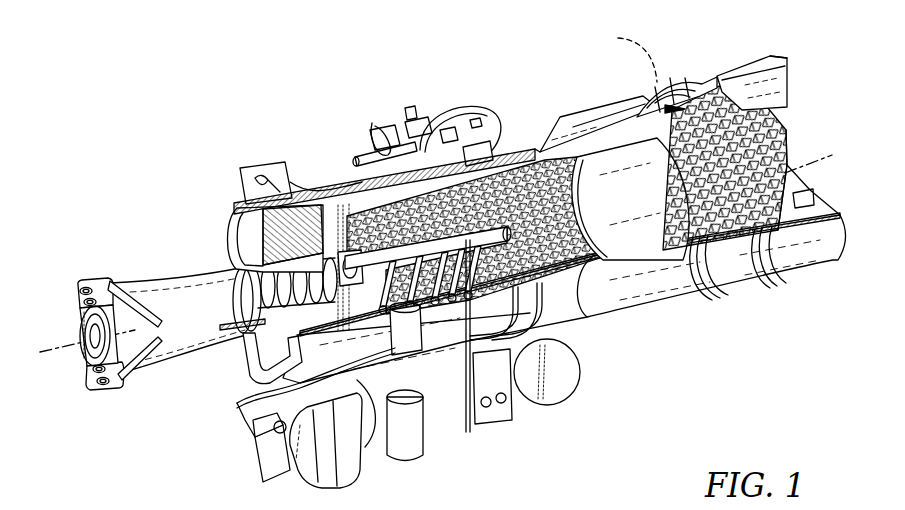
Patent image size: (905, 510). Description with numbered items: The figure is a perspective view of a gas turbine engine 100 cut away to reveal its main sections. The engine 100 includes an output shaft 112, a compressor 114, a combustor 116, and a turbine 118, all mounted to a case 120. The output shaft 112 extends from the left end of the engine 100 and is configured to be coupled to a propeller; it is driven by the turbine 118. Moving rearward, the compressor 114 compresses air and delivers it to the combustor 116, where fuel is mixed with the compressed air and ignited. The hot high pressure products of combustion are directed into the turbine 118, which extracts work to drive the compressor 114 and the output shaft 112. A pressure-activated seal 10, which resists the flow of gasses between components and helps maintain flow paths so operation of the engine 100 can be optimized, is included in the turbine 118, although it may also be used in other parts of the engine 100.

The gas turbine engine 100 is at (200, 128).
The pressure-activated seal 10 is at (708, 72).
The output shaft 112 is at (157, 287).
The compressor 114 is at (343, 180).
The combustor 116 is at (597, 118).
The turbine 118 is at (753, 238).
The case 120 is at (633, 306).